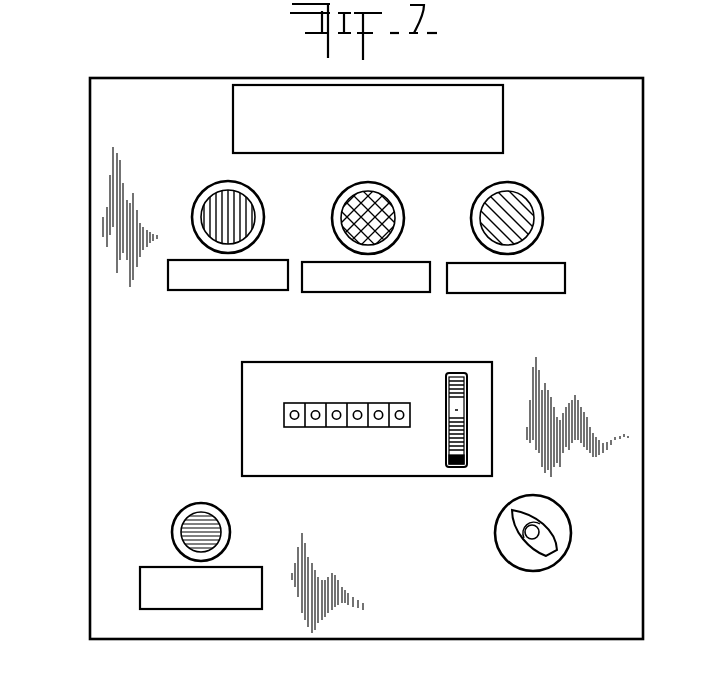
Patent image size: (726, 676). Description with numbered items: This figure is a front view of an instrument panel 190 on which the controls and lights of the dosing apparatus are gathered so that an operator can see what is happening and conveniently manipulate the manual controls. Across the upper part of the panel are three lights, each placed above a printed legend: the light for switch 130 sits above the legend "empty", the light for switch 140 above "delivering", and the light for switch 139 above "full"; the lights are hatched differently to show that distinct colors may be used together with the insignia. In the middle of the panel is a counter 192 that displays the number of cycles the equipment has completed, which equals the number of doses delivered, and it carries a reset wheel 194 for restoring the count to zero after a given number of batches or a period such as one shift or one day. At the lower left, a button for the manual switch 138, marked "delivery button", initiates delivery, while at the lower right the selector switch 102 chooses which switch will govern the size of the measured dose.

The instrument panel 190 is at (102, 402).
The empty switch 130 is at (220, 198).
The delivering switch 140 is at (362, 203).
The full switch 139 is at (495, 206).
The counter 192 is at (348, 463).
The reset wheel 194 is at (468, 382).
The manual switch 138 is at (206, 526).
The selector switch 102 is at (543, 555).